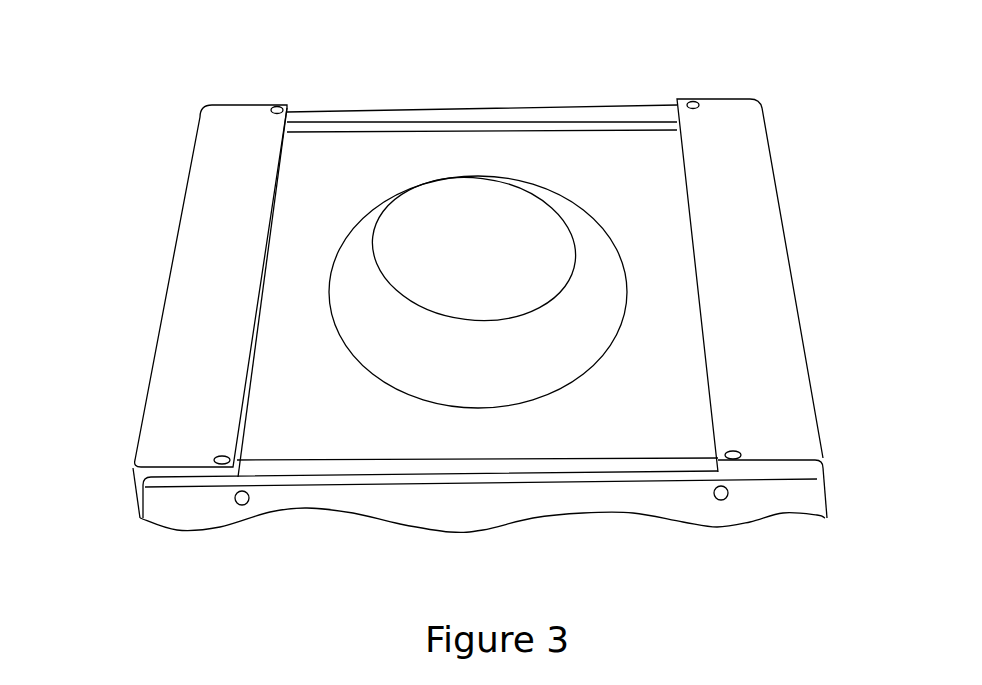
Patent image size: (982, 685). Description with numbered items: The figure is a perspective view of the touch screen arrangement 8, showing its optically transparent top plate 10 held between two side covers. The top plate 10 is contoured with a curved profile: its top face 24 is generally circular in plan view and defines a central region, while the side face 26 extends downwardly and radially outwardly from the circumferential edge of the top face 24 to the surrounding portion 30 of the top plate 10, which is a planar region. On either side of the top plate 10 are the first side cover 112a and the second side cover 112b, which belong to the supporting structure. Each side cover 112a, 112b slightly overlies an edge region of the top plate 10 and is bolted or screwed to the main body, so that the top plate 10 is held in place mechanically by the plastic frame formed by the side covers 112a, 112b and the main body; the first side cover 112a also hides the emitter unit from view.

The touch screen arrangement 8 is at (487, 319).
The top plate 10 is at (603, 162).
The top face 24 is at (490, 214).
The side face 26 is at (398, 351).
The surrounding portion 30 is at (628, 418).
The first side cover 112a is at (202, 297).
The second side cover 112b is at (762, 296).